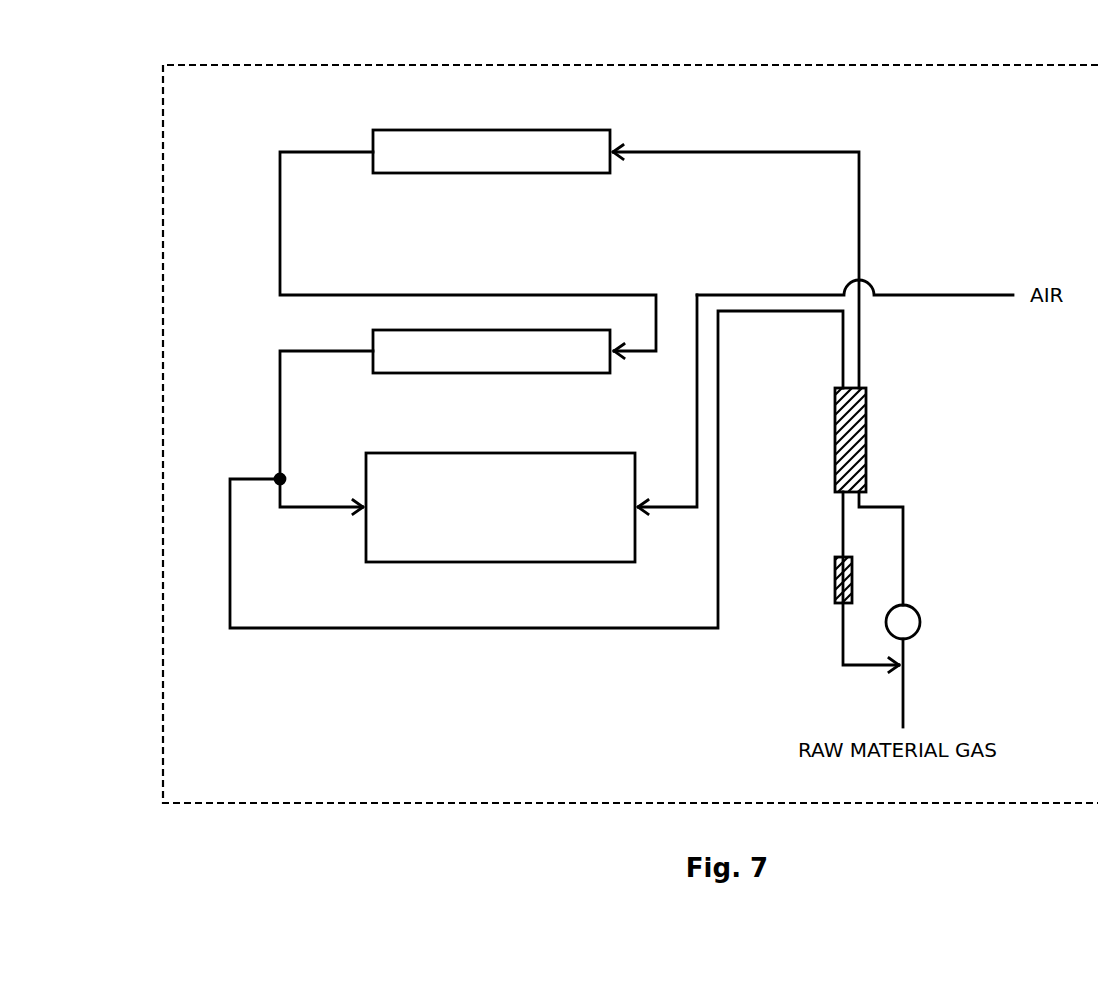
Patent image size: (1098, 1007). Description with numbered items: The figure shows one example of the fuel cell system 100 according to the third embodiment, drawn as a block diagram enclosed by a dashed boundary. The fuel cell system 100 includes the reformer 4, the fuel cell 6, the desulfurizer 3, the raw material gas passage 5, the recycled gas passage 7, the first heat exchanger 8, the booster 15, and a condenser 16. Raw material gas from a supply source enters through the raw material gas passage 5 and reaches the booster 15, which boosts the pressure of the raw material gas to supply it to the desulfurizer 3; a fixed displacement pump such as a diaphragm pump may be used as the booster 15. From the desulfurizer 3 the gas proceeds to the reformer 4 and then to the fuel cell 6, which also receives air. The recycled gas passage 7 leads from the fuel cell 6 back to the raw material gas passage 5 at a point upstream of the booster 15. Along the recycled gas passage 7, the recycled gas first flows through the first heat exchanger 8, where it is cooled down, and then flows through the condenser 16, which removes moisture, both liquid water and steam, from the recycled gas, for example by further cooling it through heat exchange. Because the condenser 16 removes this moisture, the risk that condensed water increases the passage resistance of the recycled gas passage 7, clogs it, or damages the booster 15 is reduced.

The fuel cell system 100 is at (683, 65).
The desulfurizer 3 is at (491, 151).
The reformer 4 is at (491, 351).
The raw material gas passage 5 is at (903, 575).
The fuel cell 6 is at (500, 507).
The recycled gas passage 7 is at (583, 630).
The first heat exchanger 8 is at (866, 450).
The booster 15 is at (920, 625).
The condenser 16 is at (835, 571).